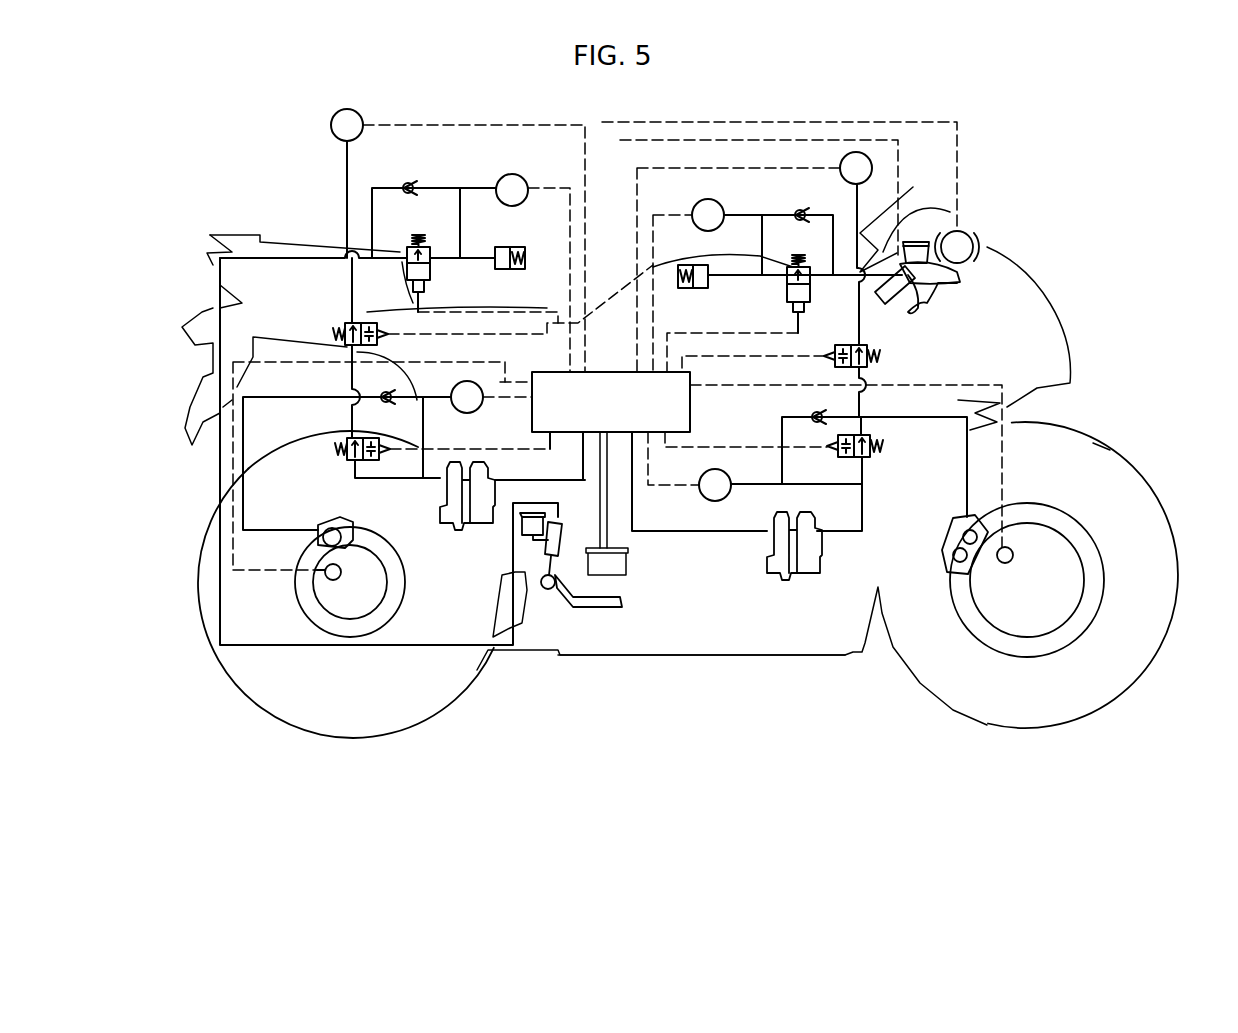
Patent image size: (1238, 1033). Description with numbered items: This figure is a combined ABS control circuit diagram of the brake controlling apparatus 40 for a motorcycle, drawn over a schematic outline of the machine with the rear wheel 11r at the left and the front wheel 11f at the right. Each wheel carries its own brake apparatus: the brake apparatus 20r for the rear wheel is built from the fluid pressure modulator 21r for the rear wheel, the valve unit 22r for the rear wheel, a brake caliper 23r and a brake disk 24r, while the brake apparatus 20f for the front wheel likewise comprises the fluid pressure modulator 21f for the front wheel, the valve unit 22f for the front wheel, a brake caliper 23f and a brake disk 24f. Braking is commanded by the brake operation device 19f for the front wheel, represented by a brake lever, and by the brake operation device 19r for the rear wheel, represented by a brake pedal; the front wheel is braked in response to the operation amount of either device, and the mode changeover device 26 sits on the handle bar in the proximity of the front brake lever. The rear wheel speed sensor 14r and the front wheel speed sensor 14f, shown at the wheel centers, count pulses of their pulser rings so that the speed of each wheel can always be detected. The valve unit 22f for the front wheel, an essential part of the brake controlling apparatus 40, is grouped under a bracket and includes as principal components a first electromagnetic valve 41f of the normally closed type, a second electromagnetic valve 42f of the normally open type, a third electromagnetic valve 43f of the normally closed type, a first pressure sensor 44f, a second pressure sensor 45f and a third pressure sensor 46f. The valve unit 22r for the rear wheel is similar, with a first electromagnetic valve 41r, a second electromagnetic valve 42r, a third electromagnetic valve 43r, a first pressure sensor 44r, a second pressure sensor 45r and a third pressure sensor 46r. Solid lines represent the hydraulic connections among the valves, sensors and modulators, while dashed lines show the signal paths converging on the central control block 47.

The rear wheel 11r is at (198, 582).
The front wheel 11f is at (1147, 488).
The rear wheel speed sensor 14r is at (337, 582).
The front wheel speed sensor 14f is at (1010, 565).
The brake operation device for the rear wheel 19r is at (593, 607).
The brake operation device for the front wheel 19f is at (920, 298).
The brake apparatus for the rear wheel 20r is at (408, 628).
The brake apparatus for the front wheel 20f is at (953, 641).
The fluid pressure modulator for the rear wheel 21r is at (455, 532).
The fluid pressure modulator for the front wheel 21f is at (795, 587).
The valve unit for the rear wheel 22r is at (568, 103).
The valve unit for the front wheel 22f is at (898, 103).
The brake caliper 23r is at (340, 520).
The brake caliper 23f is at (947, 573).
The brake disk 24r is at (310, 612).
The brake disk 24f is at (997, 652).
The mode changeover device 26 is at (960, 231).
The brake controlling apparatus 40 is at (687, 600).
The first electromagnetic valve 41r is at (432, 270).
The first electromagnetic valve 41f is at (787, 293).
The second electromagnetic valve 42r is at (345, 323).
The second electromagnetic valve 42f is at (867, 347).
The third electromagnetic valve 43r is at (347, 460).
The third electromagnetic valve 43f is at (870, 458).
The first pressure sensor 44r is at (331, 125).
The first pressure sensor 44f is at (839, 166).
The second pressure sensor 45r is at (512, 174).
The second pressure sensor 45f is at (720, 204).
The third pressure sensor 46r is at (483, 413).
The third pressure sensor 46f is at (713, 501).
The controller (ECU) 47 is at (680, 410).